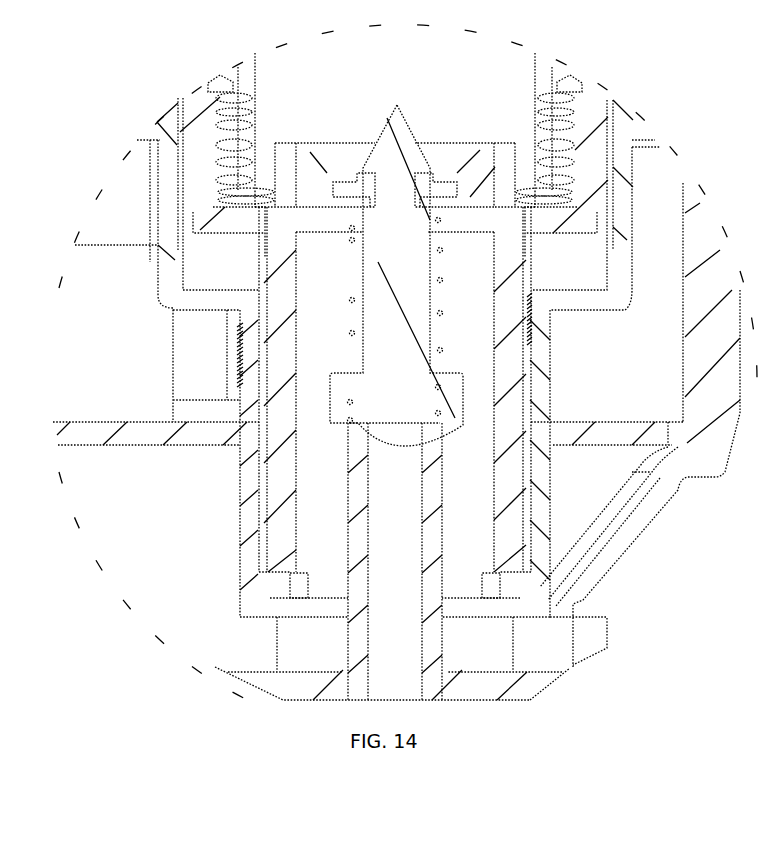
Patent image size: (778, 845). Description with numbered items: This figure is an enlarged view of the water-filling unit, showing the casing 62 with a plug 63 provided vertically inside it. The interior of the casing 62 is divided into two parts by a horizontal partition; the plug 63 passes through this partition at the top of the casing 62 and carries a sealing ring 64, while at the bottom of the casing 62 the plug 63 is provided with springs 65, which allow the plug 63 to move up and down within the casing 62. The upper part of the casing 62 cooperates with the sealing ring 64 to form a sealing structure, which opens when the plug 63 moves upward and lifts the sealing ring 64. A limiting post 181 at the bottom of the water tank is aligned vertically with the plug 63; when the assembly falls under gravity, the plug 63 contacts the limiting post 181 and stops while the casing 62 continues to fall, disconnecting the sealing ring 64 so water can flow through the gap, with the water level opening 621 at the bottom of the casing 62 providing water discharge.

The casing 62 is at (288, 451).
The water level opening 621 is at (318, 593).
The plug 63 is at (402, 277).
The sealing ring 64 is at (332, 182).
The springs 65 is at (438, 352).
The limiting post 181 is at (345, 470).